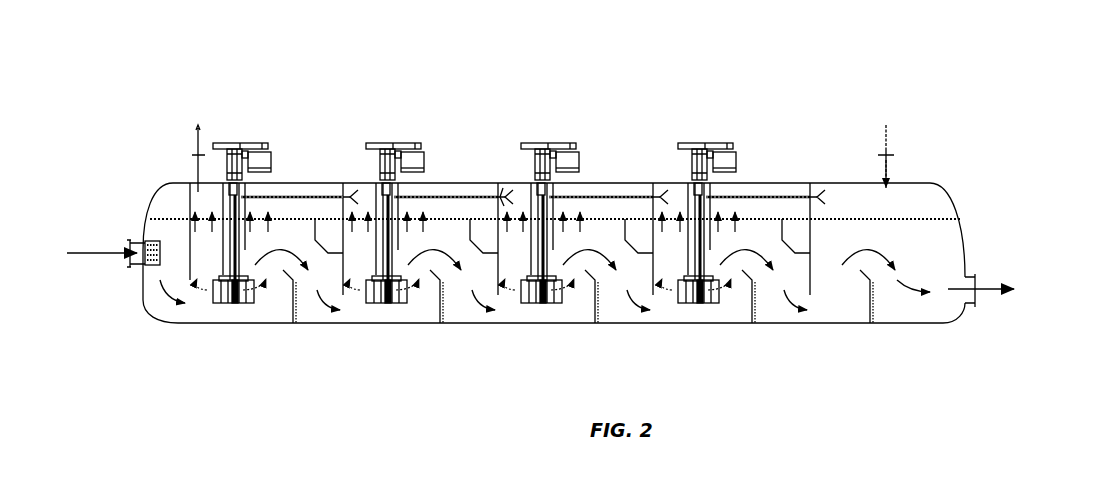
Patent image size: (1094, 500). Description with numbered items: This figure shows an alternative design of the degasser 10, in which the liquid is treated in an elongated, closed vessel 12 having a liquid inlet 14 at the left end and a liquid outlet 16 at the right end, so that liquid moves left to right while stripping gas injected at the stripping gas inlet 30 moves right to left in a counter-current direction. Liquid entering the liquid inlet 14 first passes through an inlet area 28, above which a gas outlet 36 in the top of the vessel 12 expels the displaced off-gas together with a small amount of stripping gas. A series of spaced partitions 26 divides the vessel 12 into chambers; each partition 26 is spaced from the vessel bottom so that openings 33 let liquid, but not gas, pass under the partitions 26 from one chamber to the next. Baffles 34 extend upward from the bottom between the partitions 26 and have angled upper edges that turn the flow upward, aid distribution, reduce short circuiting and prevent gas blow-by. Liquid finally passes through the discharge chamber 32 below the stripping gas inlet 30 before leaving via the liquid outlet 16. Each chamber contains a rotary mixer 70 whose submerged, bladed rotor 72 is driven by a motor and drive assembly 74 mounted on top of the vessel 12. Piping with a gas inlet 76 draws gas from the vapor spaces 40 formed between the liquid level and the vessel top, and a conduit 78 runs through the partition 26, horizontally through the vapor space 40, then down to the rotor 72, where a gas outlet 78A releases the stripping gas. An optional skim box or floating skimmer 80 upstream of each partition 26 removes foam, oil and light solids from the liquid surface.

The degasser 10 is at (750, 47).
The vessel 12 is at (183, 325).
The liquid inlet 14 is at (140, 260).
The liquid outlet 16 is at (960, 303).
The partition 26 is at (653, 283).
The inlet area 28 is at (173, 240).
The stripping gas inlet 30 is at (891, 181).
The discharge chamber 32 is at (935, 248).
The openings 33 is at (229, 310).
The baffle 34 is at (293, 307).
The gas outlet 36 is at (197, 172).
The vapor space 40 is at (303, 188).
The rotary mixer 70 is at (430, 184).
The rotor 72 is at (410, 309).
The motor and drive assembly 74 is at (359, 161).
The gas inlet 76 is at (503, 189).
The conduit 78 is at (352, 264).
The gas outlet 78A is at (385, 294).
The skim box or floating skimmer 80 is at (472, 242).